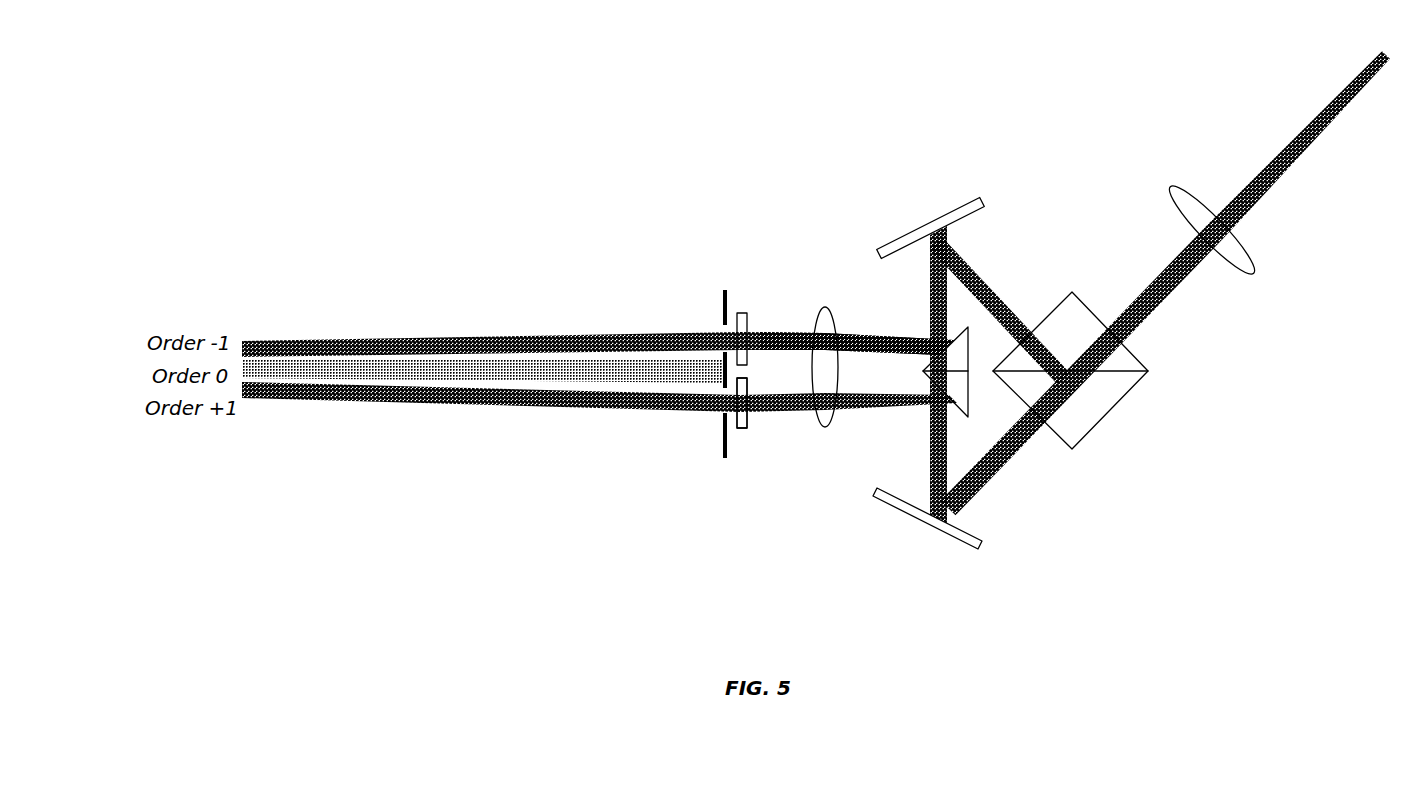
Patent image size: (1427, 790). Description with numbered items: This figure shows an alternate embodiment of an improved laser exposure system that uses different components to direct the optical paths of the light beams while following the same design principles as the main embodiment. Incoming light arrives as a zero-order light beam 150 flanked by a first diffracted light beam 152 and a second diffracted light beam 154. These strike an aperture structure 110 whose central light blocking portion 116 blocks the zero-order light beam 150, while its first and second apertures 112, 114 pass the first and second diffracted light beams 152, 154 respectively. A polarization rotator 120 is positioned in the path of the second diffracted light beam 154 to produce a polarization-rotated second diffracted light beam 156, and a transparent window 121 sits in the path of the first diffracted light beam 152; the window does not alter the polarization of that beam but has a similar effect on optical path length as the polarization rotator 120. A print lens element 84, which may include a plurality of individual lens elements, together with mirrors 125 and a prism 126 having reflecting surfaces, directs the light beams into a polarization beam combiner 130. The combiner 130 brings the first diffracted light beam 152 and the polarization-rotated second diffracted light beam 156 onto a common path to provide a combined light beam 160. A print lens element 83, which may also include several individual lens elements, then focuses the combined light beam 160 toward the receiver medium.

The print lens element 83 is at (1173, 187).
The print lens element 84 is at (826, 430).
The aperture structure 110 is at (724, 290).
The first aperture 112 is at (720, 415).
The second aperture 114 is at (717, 327).
The light blocking portion 116 is at (720, 368).
The polarization rotator 120 is at (747, 318).
The transparent window 121 is at (742, 430).
The mirrors 125 is at (963, 198).
The prism 126 is at (962, 412).
The polarization beam combiner 130 is at (1100, 420).
The zero-order light beam 150 is at (495, 373).
The first diffracted light beam 152 is at (597, 403).
The second diffracted light beam 154 is at (595, 332).
The polarization-rotated second diffracted light beam 156 is at (773, 337).
The combined light beam 160 is at (1157, 273).